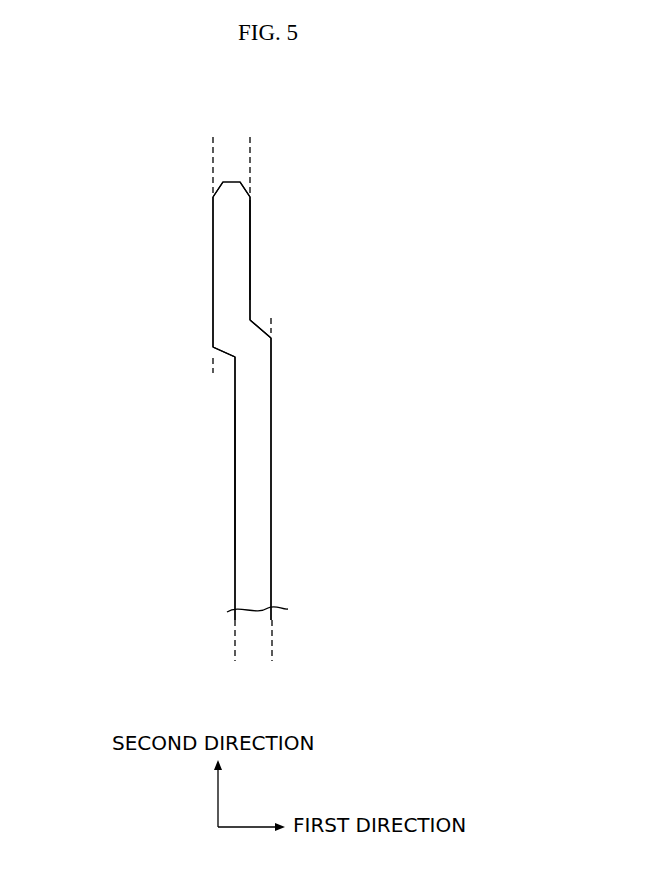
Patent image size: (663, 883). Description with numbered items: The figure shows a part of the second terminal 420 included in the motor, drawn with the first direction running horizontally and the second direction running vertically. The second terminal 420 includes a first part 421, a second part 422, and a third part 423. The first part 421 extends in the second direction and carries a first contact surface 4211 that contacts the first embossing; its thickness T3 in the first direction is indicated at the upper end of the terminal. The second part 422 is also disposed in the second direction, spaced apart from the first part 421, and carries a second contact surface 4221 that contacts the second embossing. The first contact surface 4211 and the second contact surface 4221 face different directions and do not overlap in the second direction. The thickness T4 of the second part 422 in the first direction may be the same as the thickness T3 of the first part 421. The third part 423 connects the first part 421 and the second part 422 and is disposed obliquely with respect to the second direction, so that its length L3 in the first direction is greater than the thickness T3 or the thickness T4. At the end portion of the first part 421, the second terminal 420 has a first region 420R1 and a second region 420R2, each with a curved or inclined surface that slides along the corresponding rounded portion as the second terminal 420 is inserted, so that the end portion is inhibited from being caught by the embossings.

The second terminal 420 is at (268, 270).
The first part 421 is at (232, 278).
The second part 422 is at (250, 400).
The third part 423 is at (237, 333).
The first contact surface 4211 is at (251, 227).
The second contact surface 4221 is at (233, 452).
The first region 420R1 is at (251, 191).
The second region 420R2 is at (213, 192).
The thickness of the first part T3 is at (213, 138).
The thickness of the second part T4 is at (272, 658).
The length of the third part L3 is at (213, 347).